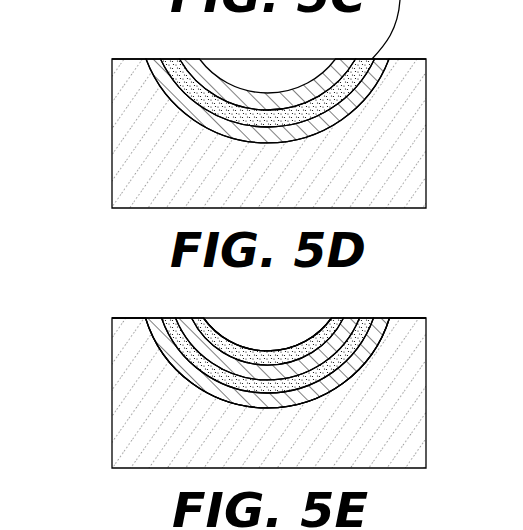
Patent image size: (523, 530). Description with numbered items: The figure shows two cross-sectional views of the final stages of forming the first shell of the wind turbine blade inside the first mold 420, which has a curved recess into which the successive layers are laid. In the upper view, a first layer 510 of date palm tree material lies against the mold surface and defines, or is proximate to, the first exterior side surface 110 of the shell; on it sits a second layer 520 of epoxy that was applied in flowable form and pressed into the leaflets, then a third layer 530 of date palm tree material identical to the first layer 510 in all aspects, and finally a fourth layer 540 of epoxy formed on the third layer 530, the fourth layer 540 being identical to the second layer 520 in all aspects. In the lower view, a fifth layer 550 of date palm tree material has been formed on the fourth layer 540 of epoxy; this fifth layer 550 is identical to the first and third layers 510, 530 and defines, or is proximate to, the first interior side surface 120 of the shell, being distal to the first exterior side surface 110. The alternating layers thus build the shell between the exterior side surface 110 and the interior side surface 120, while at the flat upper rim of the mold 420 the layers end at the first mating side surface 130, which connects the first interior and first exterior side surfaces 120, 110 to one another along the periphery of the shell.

In FIG. 5E, the first exterior side surface 110 is at (213, 403).
In FIG. 5E, the first interior side surface 120 is at (250, 347).
In FIG. 5E, the first mating side surface 130 is at (141, 306).
In FIG. 5D, the first mold 420 is at (426, 115).
In FIG. 5E, the first mold 420 is at (426, 392).
In FIG. 5D, the first layer 510 is at (387, 58).
In FIG. 5E, the first layer 510 is at (170, 368).
In FIG. 5E, the second layer 520 is at (170, 345).
In FIG. 5D, the third layer 530 is at (200, 100).
In FIG. 5E, the third layer 530 is at (347, 335).
In FIG. 5D, the fourth layer 540 is at (318, 82).
In FIG. 5E, the fourth layer 540 is at (307, 350).
In FIG. 5E, the fifth layer 550 is at (202, 322).